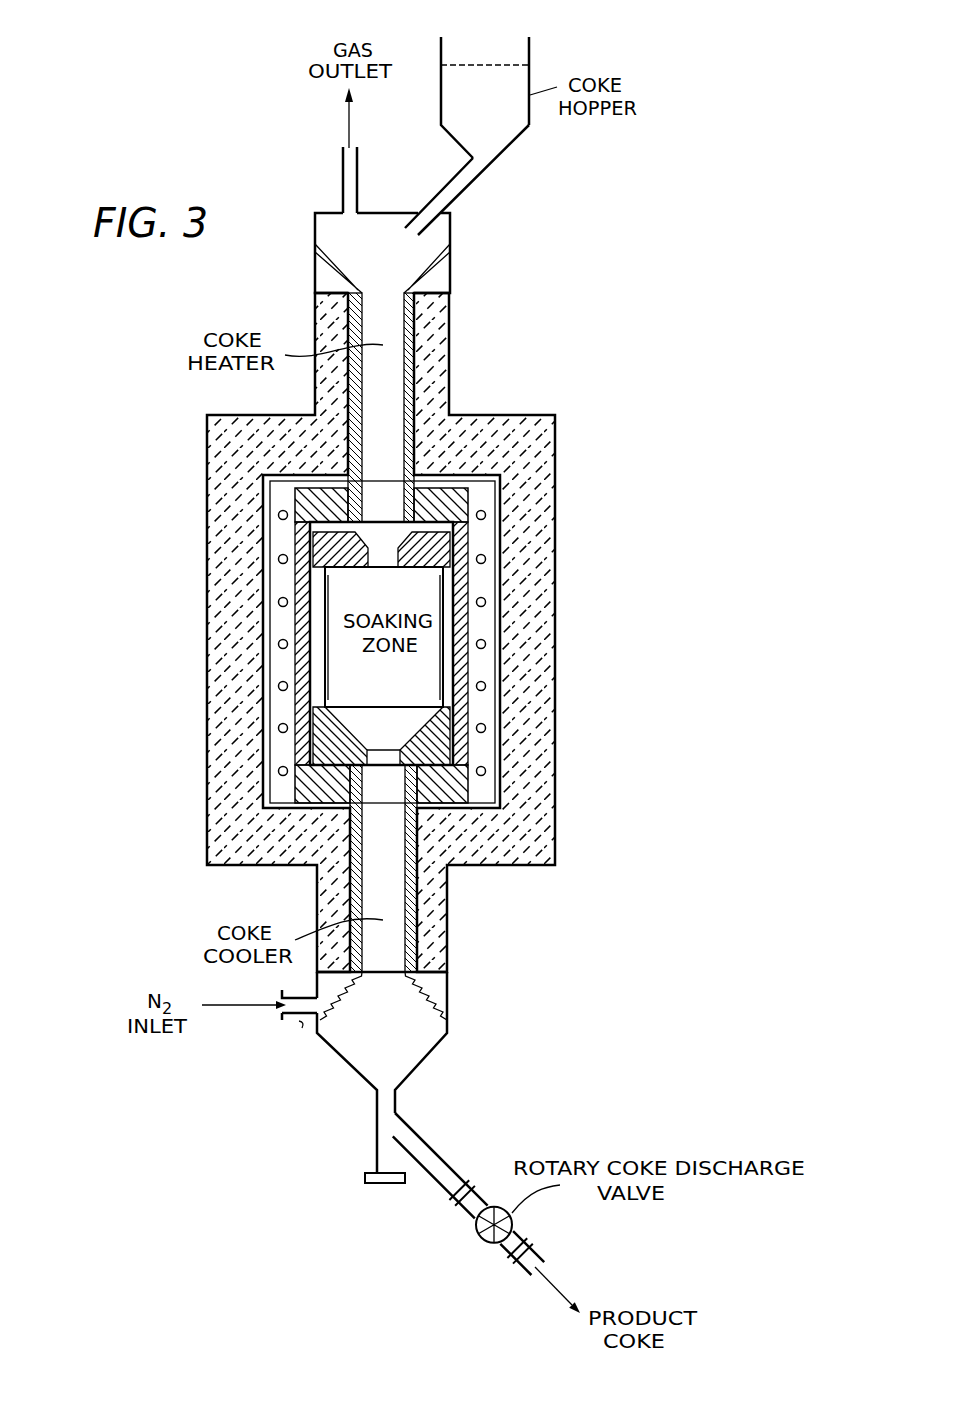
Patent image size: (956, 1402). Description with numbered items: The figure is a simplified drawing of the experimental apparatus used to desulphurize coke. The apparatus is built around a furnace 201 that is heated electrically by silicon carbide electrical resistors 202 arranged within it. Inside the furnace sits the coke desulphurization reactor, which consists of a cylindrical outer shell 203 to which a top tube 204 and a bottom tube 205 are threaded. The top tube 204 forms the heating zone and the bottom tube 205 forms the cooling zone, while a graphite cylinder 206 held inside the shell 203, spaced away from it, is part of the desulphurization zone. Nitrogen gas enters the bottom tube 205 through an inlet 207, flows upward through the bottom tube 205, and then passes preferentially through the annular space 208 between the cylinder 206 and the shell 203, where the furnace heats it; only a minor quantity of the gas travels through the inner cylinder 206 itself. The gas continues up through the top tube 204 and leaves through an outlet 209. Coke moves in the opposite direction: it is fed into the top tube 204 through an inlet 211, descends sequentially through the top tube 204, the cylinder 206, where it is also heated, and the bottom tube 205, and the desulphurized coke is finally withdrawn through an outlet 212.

The furnace 201 is at (533, 615).
The silicon carbide electrical resistors 202 is at (486, 686).
The cylindrical outer shell 203 is at (462, 545).
The top tube 204 is at (413, 325).
The bottom tube 205 is at (410, 918).
The graphite cylinder 206 is at (320, 657).
The inlet 207 is at (289, 1022).
The annular space 208 is at (450, 635).
The outlet 209 is at (343, 183).
The inlet 211 is at (462, 185).
The outlet 212 is at (422, 1142).